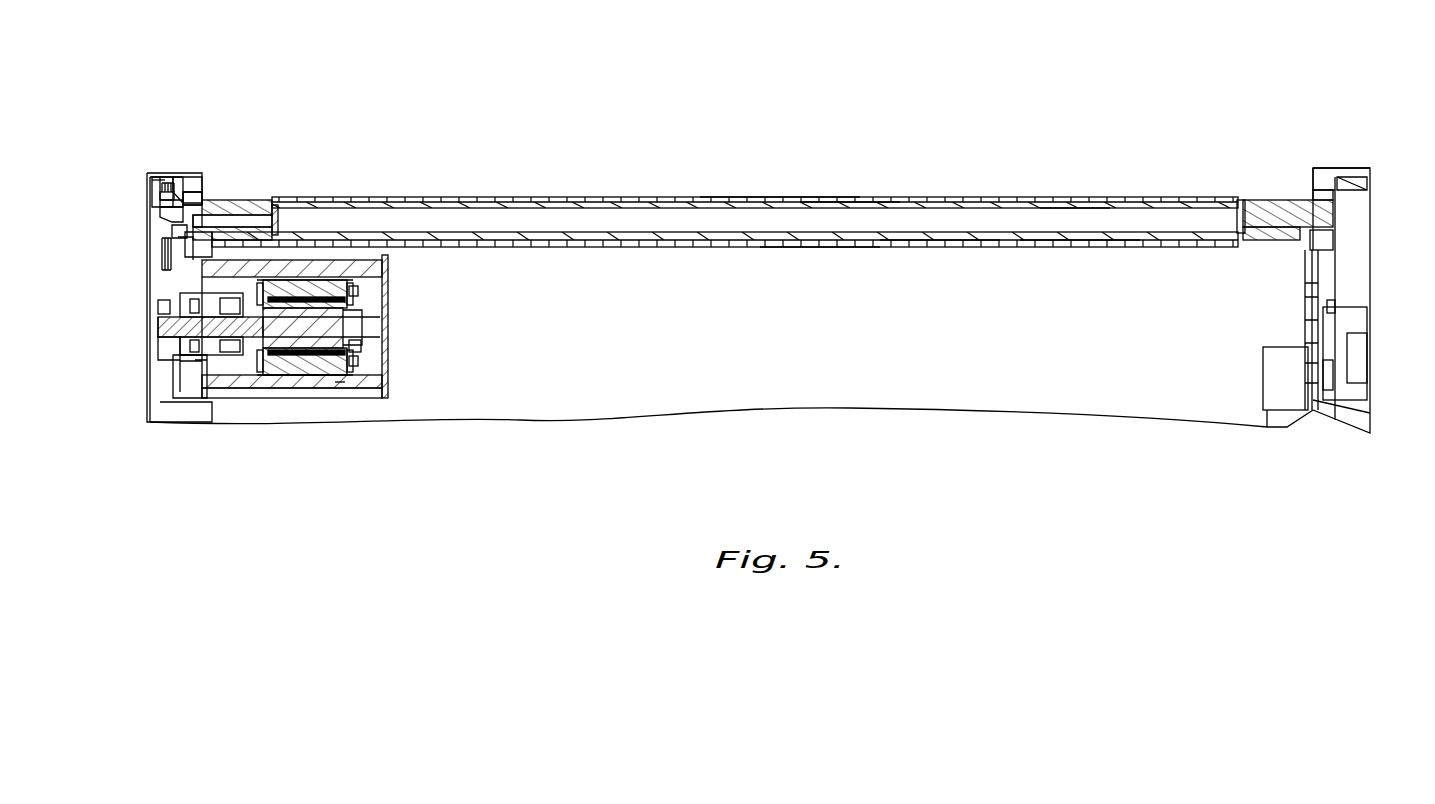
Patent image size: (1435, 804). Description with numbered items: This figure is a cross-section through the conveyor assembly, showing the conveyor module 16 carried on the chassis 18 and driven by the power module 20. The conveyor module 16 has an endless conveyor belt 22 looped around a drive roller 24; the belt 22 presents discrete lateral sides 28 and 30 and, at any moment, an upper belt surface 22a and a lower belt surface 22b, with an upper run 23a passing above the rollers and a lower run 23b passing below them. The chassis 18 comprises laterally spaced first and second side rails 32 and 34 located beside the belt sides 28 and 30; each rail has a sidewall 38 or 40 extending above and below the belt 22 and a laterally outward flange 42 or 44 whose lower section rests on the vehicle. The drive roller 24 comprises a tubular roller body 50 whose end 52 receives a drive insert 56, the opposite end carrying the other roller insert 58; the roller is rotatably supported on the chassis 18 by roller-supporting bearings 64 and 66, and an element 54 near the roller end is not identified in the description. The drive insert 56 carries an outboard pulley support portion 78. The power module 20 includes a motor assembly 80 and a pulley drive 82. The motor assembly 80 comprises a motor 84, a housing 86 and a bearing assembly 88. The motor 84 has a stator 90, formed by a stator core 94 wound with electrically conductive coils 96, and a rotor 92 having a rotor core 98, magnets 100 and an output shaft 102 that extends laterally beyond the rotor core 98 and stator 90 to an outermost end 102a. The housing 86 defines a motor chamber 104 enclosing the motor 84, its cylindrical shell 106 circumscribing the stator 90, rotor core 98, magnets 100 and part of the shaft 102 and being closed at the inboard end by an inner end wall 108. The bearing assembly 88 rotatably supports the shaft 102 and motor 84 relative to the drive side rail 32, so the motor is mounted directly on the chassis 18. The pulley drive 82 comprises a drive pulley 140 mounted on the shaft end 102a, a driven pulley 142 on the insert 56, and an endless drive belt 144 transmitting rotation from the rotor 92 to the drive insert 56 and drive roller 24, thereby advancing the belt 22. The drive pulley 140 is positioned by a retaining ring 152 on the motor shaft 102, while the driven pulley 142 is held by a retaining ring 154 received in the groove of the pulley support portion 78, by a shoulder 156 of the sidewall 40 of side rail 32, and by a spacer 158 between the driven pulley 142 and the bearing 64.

The conveyor module 16 is at (1072, 112).
The chassis 18 is at (158, 165).
The power module 20 is at (263, 392).
The conveyor belt 22 is at (940, 197).
The upper belt surface 22a is at (770, 200).
The lower belt surface 22b is at (800, 249).
The upper run 23a is at (838, 200).
The lower run 23b is at (906, 249).
The drive roller 24 is at (482, 198).
The lateral side 28 is at (208, 193).
The lateral side 30 is at (1310, 200).
The first side rail 32 is at (198, 157).
The second side rail 34 is at (1335, 165).
The sidewall 38 is at (176, 248).
The sidewall 40 is at (1308, 283).
The flange 42 is at (165, 178).
The flange 44 is at (1358, 177).
The tubular roller body 50 is at (1075, 233).
The end of roller body 52 is at (252, 203).
The spacer 54 is at (1241, 200).
The drive insert 56 is at (232, 206).
The roller insert 58 is at (1257, 203).
The roller-supporting bearing 64 is at (205, 188).
The roller-supporting bearing 66 is at (1325, 205).
The pulley support portion 78 is at (172, 225).
The motor assembly 80 is at (363, 387).
The pulley drive 82 is at (152, 352).
The motor 84 is at (331, 380).
The housing 86 is at (410, 333).
The bearing assembly 88 is at (207, 350).
The stator 90 is at (385, 282).
The rotor 92 is at (374, 313).
The stator core 94 is at (297, 375).
The coils 96 is at (307, 378).
The rotor core 98 is at (358, 360).
The magnets 100 is at (340, 382).
The output shaft 102 is at (187, 323).
The outermost end of motor shaft 102a is at (176, 327).
The motor chamber 104 is at (247, 345).
The cylindrical shell 106 is at (360, 272).
The inner end wall 108 is at (390, 387).
The drive pulley 140 is at (167, 363).
The driven pulley 142 is at (168, 198).
The drive belt 144 is at (165, 188).
The retaining ring 152 is at (165, 312).
The retaining ring 154 is at (170, 207).
The shoulder 156 is at (183, 192).
The spacer 158 is at (158, 162).